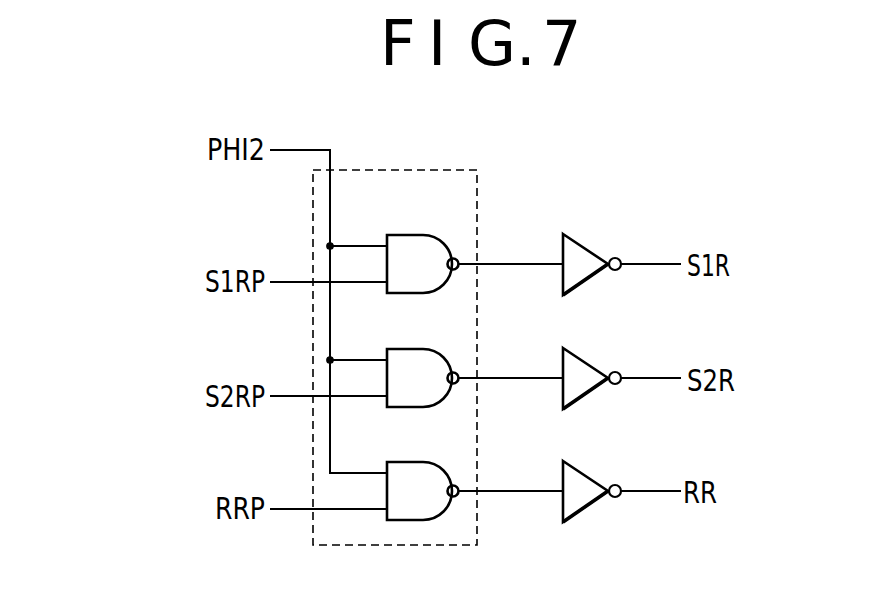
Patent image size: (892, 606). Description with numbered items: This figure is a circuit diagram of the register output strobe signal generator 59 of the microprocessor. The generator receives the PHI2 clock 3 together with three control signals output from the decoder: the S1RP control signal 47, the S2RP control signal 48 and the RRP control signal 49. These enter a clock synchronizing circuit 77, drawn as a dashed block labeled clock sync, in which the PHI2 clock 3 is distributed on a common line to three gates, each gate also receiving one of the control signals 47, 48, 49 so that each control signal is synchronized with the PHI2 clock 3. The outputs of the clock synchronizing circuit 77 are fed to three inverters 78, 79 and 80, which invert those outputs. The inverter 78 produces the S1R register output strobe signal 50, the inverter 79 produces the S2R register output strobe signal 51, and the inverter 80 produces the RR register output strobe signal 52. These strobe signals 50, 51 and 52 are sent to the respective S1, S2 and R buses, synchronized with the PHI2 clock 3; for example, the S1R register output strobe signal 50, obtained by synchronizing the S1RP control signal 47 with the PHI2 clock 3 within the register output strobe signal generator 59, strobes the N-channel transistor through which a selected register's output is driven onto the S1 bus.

The PHI2 clock 3 is at (332, 161).
The clock synchronizing circuit 77 is at (416, 170).
The S1RP control signal 47 is at (292, 281).
The S2RP control signal 48 is at (290, 396).
The RRP control signal 49 is at (291, 509).
The register output strobe signal generator 59 is at (645, 180).
The S1R register output strobe signal 50 is at (655, 263).
The S2R register output strobe signal 51 is at (655, 377).
The RR register output strobe signal 52 is at (655, 490).
The inverter 78 is at (588, 280).
The inverter 79 is at (588, 394).
The inverter 80 is at (589, 507).